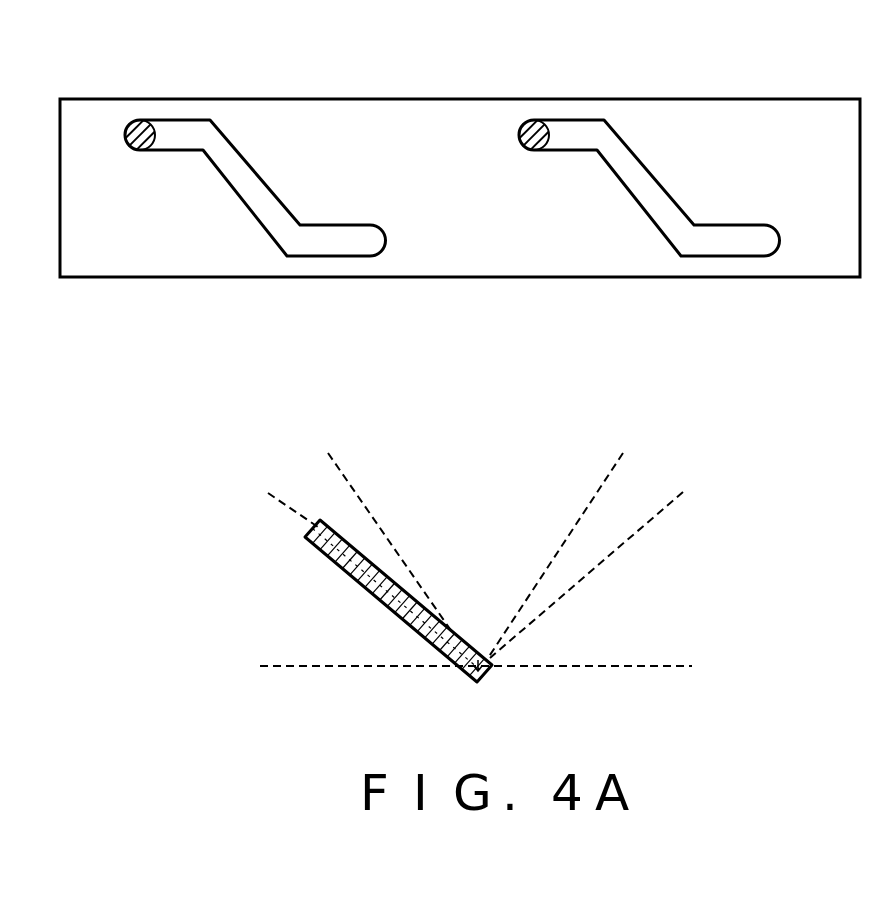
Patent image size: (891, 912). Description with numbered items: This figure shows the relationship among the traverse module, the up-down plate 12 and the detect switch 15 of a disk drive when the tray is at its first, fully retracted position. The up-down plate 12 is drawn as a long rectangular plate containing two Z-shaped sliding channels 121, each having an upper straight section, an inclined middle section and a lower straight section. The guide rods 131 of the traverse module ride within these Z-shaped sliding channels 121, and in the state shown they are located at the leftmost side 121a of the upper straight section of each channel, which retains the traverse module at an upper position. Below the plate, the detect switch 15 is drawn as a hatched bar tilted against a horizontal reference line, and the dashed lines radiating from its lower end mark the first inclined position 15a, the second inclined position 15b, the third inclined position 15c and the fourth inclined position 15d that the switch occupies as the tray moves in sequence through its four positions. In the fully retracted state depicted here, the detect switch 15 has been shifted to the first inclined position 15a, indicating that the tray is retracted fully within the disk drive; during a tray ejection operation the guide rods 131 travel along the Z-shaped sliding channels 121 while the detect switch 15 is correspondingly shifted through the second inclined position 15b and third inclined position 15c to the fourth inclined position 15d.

The up-down plate 12 is at (814, 98).
The Z-shaped sliding channels 121 is at (268, 235).
The leftmost side of the upper straight section 121a is at (150, 121).
The guide rods 131 is at (138, 122).
The detect switch 15 is at (318, 550).
The first inclined position 15a is at (283, 503).
The second inclined position 15b is at (347, 478).
The third inclined position 15c is at (613, 470).
The fourth inclined position 15d is at (673, 500).